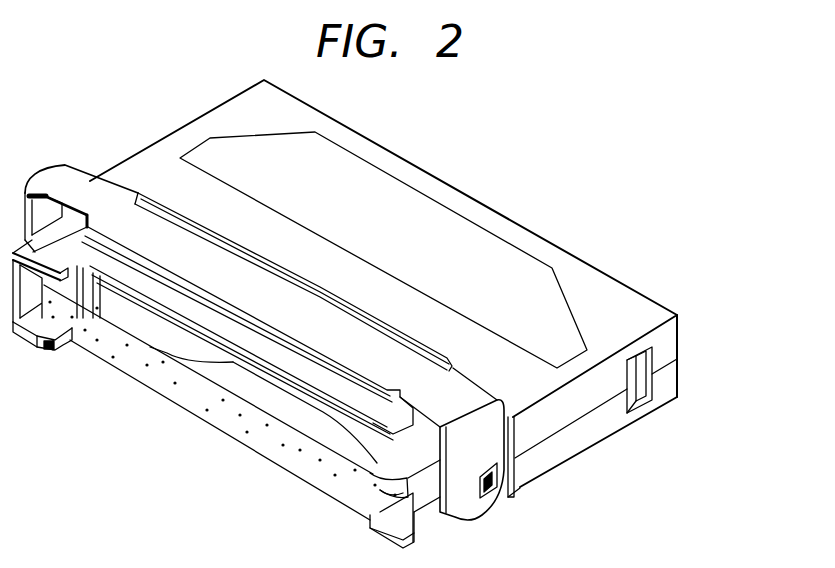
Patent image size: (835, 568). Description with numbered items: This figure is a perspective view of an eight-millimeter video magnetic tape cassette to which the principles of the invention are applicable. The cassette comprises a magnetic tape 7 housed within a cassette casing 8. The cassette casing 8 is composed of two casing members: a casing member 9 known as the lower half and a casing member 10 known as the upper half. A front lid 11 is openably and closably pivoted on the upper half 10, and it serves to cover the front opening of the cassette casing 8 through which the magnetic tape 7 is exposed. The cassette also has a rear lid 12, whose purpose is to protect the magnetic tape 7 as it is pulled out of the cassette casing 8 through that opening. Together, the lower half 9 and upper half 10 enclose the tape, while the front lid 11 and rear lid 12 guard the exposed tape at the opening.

The magnetic tape 7 is at (190, 393).
The cassette casing 8 is at (757, 220).
The casing member (lower half) 9 is at (665, 387).
The casing member (upper half) 10 is at (642, 316).
The front lid 11 is at (470, 503).
The rear lid 12 is at (153, 192).